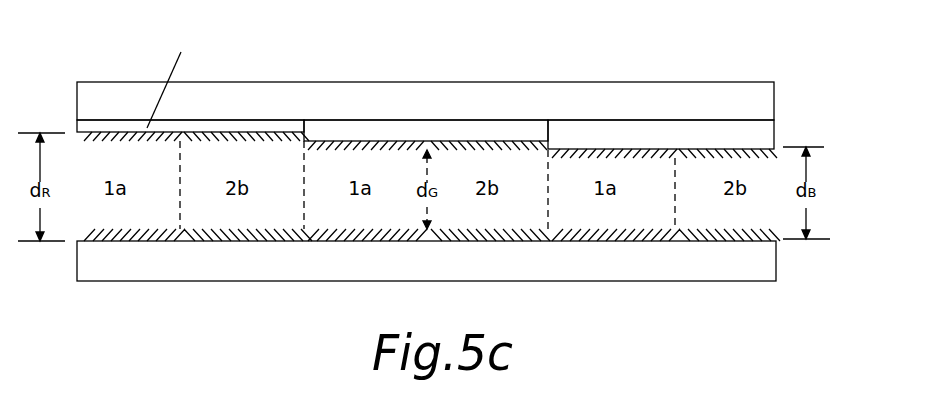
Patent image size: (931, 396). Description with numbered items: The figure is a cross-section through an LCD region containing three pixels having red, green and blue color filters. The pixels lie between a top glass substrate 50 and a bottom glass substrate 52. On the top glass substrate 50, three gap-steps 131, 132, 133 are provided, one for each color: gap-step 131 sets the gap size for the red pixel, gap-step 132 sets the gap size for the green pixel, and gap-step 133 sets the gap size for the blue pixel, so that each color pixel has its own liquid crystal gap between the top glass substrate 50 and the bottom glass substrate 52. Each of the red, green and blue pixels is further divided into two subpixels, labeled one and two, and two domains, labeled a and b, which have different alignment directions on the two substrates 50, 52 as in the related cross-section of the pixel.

The top glass substrate 50 is at (765, 97).
The bottom glass substrate 52 is at (772, 256).
The gap-step 131 is at (77, 128).
The gap-step 132 is at (523, 127).
The gap-step 133 is at (772, 131).